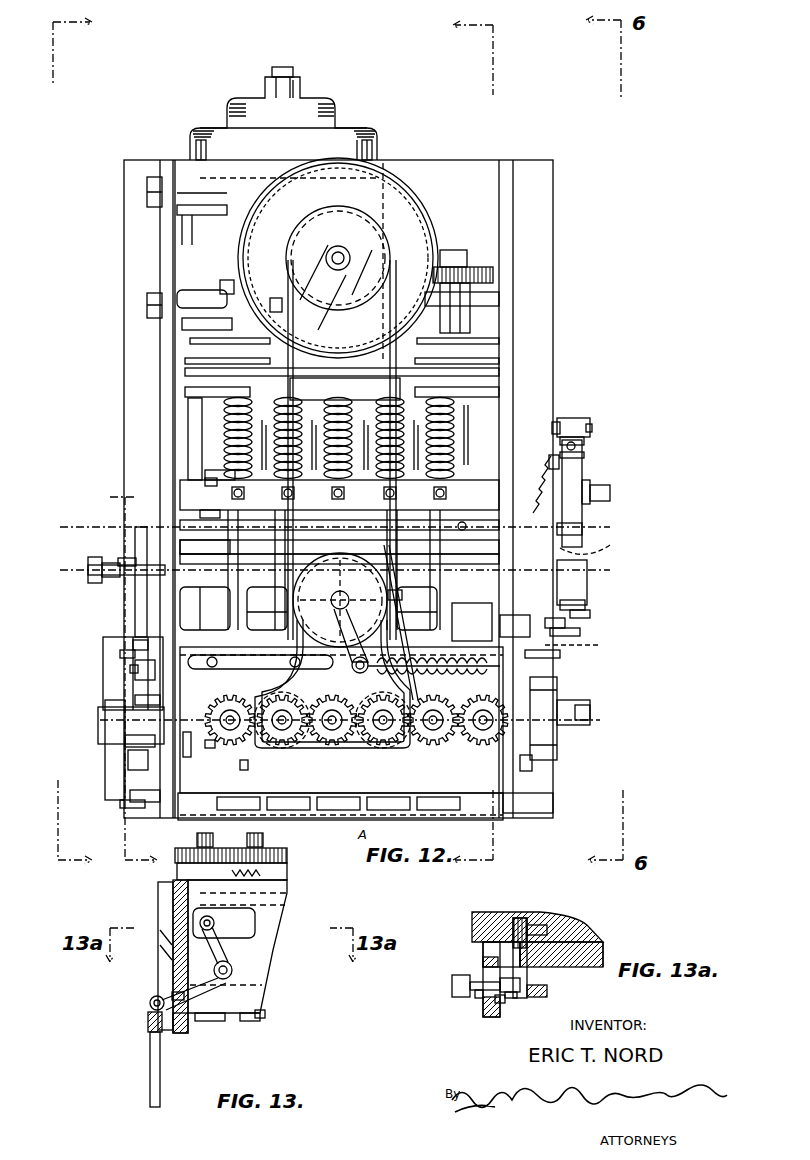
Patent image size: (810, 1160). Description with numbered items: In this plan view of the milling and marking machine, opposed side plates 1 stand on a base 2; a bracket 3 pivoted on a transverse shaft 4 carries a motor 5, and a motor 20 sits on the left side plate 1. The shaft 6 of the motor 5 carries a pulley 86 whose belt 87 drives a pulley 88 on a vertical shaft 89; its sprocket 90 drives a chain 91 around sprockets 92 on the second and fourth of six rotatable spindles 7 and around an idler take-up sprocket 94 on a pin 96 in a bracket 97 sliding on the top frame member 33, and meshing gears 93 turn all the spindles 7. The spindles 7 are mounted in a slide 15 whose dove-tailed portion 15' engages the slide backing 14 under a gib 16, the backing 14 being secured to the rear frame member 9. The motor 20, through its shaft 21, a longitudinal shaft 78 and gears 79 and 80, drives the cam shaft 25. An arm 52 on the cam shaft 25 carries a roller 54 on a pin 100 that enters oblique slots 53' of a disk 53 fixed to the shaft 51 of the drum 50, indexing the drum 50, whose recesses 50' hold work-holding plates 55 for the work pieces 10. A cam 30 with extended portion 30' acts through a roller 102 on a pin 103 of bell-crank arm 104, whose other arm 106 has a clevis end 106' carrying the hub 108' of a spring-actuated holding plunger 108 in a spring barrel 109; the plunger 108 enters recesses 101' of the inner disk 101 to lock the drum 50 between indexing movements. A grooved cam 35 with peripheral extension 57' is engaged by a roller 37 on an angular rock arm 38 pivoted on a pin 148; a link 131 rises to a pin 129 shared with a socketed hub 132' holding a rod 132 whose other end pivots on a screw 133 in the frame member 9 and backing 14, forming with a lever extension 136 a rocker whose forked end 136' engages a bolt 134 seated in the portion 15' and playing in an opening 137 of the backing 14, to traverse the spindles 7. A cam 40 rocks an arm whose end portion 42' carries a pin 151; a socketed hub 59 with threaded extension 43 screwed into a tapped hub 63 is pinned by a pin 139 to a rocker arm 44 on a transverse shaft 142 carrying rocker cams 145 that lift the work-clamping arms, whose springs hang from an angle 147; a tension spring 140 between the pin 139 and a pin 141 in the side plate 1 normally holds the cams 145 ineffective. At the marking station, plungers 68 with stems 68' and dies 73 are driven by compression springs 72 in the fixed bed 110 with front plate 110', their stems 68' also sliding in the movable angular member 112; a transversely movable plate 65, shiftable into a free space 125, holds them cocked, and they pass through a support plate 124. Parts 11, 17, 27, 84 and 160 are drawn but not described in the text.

In FIG. 12, the side plates 1 is at (514, 308).
In FIG. 13, the side plates 1 is at (178, 1035).
In FIG. 13A, the side plates 1 is at (490, 1018).
In FIG. 12, the base 2 is at (553, 233).
In FIG. 12, the bracket 3 is at (312, 326).
In FIG. 12, the transverse shaft 4 is at (185, 390).
In FIG. 12, the motor 5 is at (400, 186).
In FIG. 12, the shaft 6 is at (340, 253).
In FIG. 12, the rotatable spindles 7 is at (303, 830).
In FIG. 12, the rear frame member 9 is at (205, 608).
In FIG. 13, the rear frame member 9 is at (270, 940).
In FIG. 13A, the rear frame member 9 is at (580, 968).
In FIG. 12, the work pieces 10 is at (436, 810).
In FIG. 12, the section line 11 is at (122, 679).
In FIG. 12, the slide backing 14 is at (492, 444).
In FIG. 13A, the slide backing 14 is at (603, 950).
In FIG. 12, the slide 15 is at (390, 718).
In FIG. 13, the slide 15 is at (141, 956).
In FIG. 13A, the slide 15 is at (464, 958).
In FIG. 13, the extended dove-tailed sliding portion 15' is at (145, 945).
In FIG. 13A, the extended dove-tailed sliding portion 15' is at (537, 911).
In FIG. 13, the gib 16 is at (175, 890).
In FIG. 12, the knurled bar 17 is at (244, 771).
In FIG. 13, the knurled bar 17 is at (288, 868).
In FIG. 12, the motor 20 is at (330, 119).
In FIG. 12, the shaft 21 is at (279, 66).
In FIG. 12, the cam shaft 25 is at (590, 579).
In FIG. 12, the knob 27 is at (213, 749).
In FIG. 13, the knob 27 is at (265, 843).
In FIG. 12, the cam 30 is at (335, 545).
In FIG. 12, the extended portion of cam 30' is at (97, 582).
In FIG. 12, the transverse top frame member 33 is at (445, 672).
In FIG. 12, the cam 35 is at (580, 634).
In FIG. 12, the roller 37 is at (600, 550).
In FIG. 12, the angular rock arm 38 is at (587, 606).
In FIG. 12, the cam 40 is at (587, 616).
In FIG. 12, the end portion of rocker arm 42' is at (591, 398).
In FIG. 12, the threaded extension 43 is at (582, 440).
In FIG. 12, the rocker arm 44 is at (583, 471).
In FIG. 12, the drum 50 is at (350, 744).
In FIG. 12, the plane surfaced recesses 50' is at (528, 816).
In FIG. 12, the transverse shaft 51 is at (590, 713).
In FIG. 12, the actuating arm 52 is at (88, 560).
In FIG. 12, the disk 53 is at (100, 673).
In FIG. 12, the oblique slots 53' is at (101, 725).
In FIG. 12, the roller 54 is at (118, 560).
In FIG. 13, the work-holding plates 55 is at (262, 870).
In FIG. 12, the peripheral extension 57' is at (579, 660).
In FIG. 12, the socketed hub 59 is at (558, 421).
In FIG. 12, the tapped hub 63 is at (575, 446).
In FIG. 12, the transversely movable plate 65 is at (205, 512).
In FIG. 12, the marking plungers 68 is at (219, 461).
In FIG. 12, the rear stem portions 68' is at (207, 319).
In FIG. 12, the compression springs 72 is at (226, 428).
In FIG. 12, the die members 73 is at (206, 608).
In FIG. 12, the longitudinal shaft 78 is at (499, 326).
In FIG. 12, the gear 79 is at (452, 250).
In FIG. 12, the gear 80 is at (480, 267).
In FIG. 12, the bolt 84 is at (224, 280).
In FIG. 12, the pulley 86 is at (300, 241).
In FIG. 12, the belt 87 is at (398, 593).
In FIG. 12, the pulley 88 is at (267, 608).
In FIG. 12, the vertical shaft 89 is at (340, 600).
In FIG. 12, the sprocket 90 is at (267, 618).
In FIG. 12, the chain 91 is at (345, 750).
In FIG. 12, the sprockets 92 is at (398, 748).
In FIG. 12, the gears 93 is at (246, 827).
In FIG. 12, the idler take-up sprocket 94 is at (334, 625).
In FIG. 12, the pin 96 is at (417, 618).
In FIG. 12, the bracket 97 is at (215, 672).
In FIG. 12, the pin 100 is at (102, 573).
In FIG. 12, the disk 101 is at (119, 666).
In FIG. 12, the peripheral recesses 101' is at (118, 694).
In FIG. 12, the roller 102 is at (133, 642).
In FIG. 12, the pin 103 is at (122, 652).
In FIG. 12, the bell crank arm 104 is at (130, 668).
In FIG. 12, the bell crank arm 106 is at (103, 760).
In FIG. 12, the clevis end portion 106' is at (113, 807).
In FIG. 12, the spring-actuated holding plunger 108 is at (101, 738).
In FIG. 12, the socketed hub portion 108' is at (136, 820).
In FIG. 12, the spring barrel 109 is at (105, 790).
In FIG. 12, the fixed bed member 110 is at (294, 460).
In FIG. 12, the front plate 110' is at (320, 502).
In FIG. 12, the longitudinally movable angular member 112 is at (190, 340).
In FIG. 12, the transverse support plate 124 is at (215, 556).
In FIG. 12, the free space 125 is at (200, 545).
In FIG. 13, the pin 129 is at (150, 1006).
In FIG. 12, the link 131 is at (565, 626).
In FIG. 13, the link 131 is at (150, 1100).
In FIG. 13A, the link 131 is at (452, 986).
In FIG. 12, the rod 132 is at (521, 628).
In FIG. 13, the rod 132 is at (211, 1031).
In FIG. 13A, the rod 132 is at (514, 1015).
In FIG. 13, the socketed hub 132' is at (143, 995).
In FIG. 13A, the socketed hub 132' is at (464, 1014).
In FIG. 12, the screw 133 is at (472, 610).
In FIG. 13, the screw 133 is at (262, 1015).
In FIG. 13A, the screw 133 is at (548, 997).
In FIG. 12, the bolt 134 is at (555, 658).
In FIG. 13, the bolt 134 is at (212, 918).
In FIG. 13A, the bolt 134 is at (483, 946).
In FIG. 12, the lever extension 136 is at (417, 608).
In FIG. 13, the lever extension 136 is at (263, 970).
In FIG. 13A, the lever extension 136 is at (551, 958).
In FIG. 13, the forked end 136' is at (264, 921).
In FIG. 13A, the forked end 136' is at (473, 971).
In FIG. 13A, the opening 137 is at (590, 930).
In FIG. 12, the pin 139 is at (583, 453).
In FIG. 12, the tension spring 140 is at (552, 455).
In FIG. 12, the pin 141 is at (540, 492).
In FIG. 12, the transverse shaft 142 is at (585, 529).
In FIG. 12, the rocker cams 145 is at (463, 521).
In FIG. 12, the angle 147 is at (208, 478).
In FIG. 12, the pin 148 is at (610, 491).
In FIG. 12, the pin 151 is at (590, 425).
In FIG. 12, the cylinder 160 is at (205, 290).